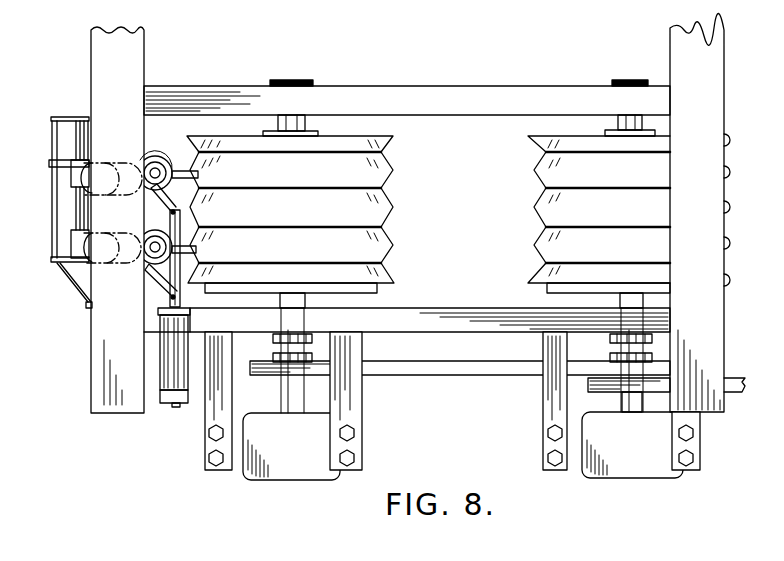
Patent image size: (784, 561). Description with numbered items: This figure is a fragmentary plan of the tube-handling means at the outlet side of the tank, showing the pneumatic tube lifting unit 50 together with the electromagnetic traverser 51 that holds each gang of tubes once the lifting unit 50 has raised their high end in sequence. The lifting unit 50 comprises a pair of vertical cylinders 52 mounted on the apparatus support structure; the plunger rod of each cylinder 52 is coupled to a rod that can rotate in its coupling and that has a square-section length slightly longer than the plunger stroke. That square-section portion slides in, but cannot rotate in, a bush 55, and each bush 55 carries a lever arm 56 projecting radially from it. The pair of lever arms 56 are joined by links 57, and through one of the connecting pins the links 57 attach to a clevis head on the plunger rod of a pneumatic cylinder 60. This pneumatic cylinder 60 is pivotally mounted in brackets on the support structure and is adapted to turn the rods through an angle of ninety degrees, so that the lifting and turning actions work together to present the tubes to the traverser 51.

The pneumatic tube lifting unit 50 is at (164, 157).
The electromagnetic traverser 51 is at (524, 207).
The vertical cylinders 52 is at (87, 260).
The bush 55 is at (147, 157).
The lever arm 56 is at (160, 200).
The links 57 is at (182, 232).
The pneumatic cylinder 60 is at (175, 401).